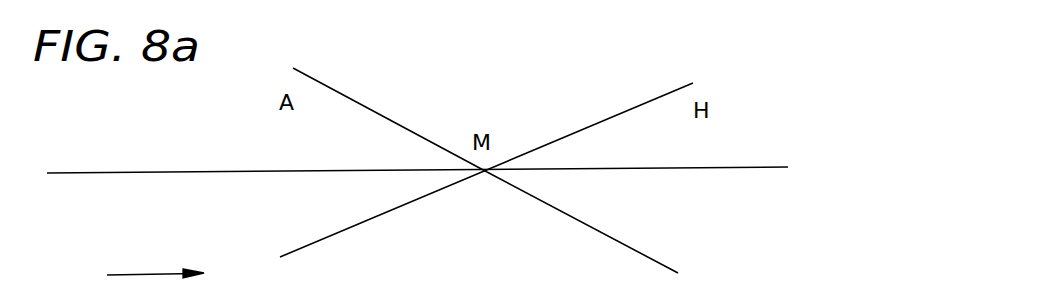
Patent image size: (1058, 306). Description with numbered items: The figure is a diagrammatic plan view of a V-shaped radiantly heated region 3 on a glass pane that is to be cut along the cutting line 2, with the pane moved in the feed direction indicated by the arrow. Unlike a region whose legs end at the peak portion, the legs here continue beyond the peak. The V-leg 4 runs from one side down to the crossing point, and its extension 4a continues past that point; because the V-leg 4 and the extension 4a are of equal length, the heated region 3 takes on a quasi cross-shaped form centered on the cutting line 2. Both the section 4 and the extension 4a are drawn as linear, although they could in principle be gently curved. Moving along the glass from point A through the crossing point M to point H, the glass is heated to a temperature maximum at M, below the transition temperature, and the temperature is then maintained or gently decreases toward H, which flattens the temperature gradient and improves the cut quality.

The cutting line 2 is at (175, 172).
The V-shaped radiantly heated region 3 is at (356, 219).
The V-leg 4 is at (398, 124).
The extension 4a is at (585, 227).